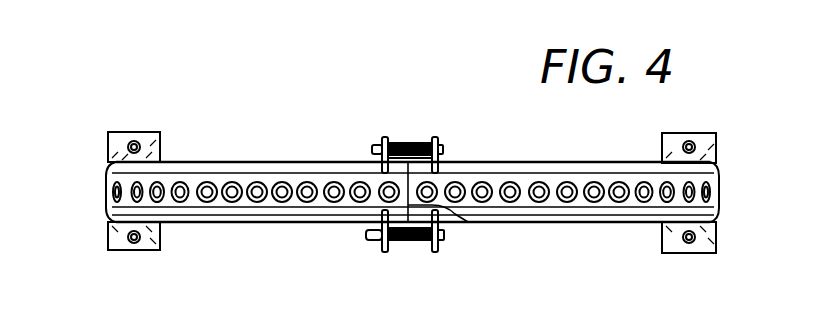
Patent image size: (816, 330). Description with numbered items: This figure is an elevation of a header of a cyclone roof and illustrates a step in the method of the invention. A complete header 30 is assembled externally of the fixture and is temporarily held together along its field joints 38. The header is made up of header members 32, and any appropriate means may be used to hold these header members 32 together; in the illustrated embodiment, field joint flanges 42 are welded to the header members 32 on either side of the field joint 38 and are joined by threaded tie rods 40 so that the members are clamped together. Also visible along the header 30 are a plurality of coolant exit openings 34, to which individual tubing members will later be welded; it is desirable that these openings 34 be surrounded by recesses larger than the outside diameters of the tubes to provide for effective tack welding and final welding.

The header 30 is at (285, 136).
The header member 32 is at (305, 226).
The coolant exit opening 34 is at (588, 184).
The field joint 38 is at (460, 220).
The threaded tie rod 40 is at (411, 137).
The field joint flange 42 is at (108, 146).